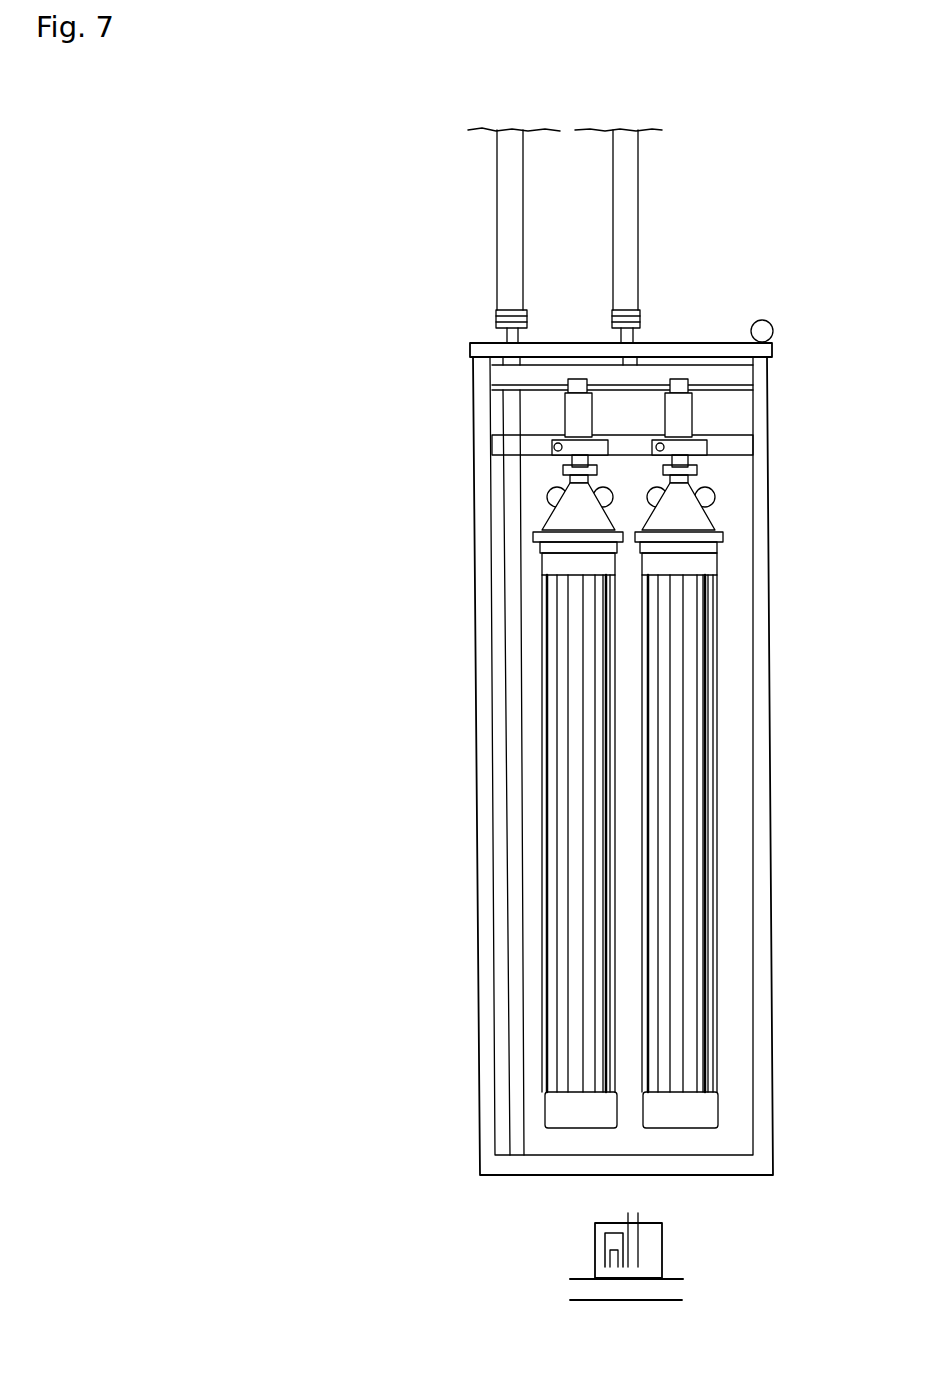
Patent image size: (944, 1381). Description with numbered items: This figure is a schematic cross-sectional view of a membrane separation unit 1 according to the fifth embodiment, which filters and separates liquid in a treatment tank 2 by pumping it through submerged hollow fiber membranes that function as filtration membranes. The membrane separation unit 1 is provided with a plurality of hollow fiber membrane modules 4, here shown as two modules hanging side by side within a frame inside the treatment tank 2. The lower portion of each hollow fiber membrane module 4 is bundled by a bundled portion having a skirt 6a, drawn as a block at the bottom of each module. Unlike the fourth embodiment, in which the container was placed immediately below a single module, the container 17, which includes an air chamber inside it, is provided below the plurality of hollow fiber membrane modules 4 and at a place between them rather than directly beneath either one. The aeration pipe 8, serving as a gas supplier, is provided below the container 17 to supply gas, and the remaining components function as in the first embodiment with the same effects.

The membrane separation unit 1 is at (799, 336).
The treatment tank 2 is at (862, 688).
The hollow fiber membrane module 4 is at (705, 878).
The skirt 6a is at (718, 1100).
The aeration pipe 8 is at (683, 1279).
The container 17 is at (662, 1245).